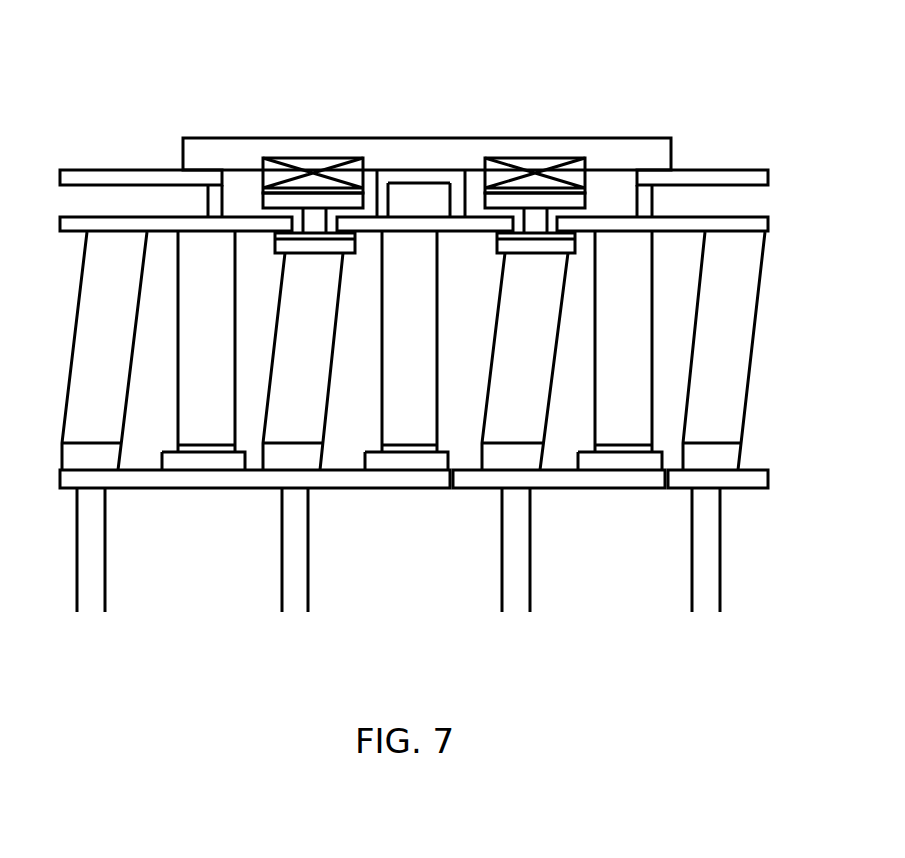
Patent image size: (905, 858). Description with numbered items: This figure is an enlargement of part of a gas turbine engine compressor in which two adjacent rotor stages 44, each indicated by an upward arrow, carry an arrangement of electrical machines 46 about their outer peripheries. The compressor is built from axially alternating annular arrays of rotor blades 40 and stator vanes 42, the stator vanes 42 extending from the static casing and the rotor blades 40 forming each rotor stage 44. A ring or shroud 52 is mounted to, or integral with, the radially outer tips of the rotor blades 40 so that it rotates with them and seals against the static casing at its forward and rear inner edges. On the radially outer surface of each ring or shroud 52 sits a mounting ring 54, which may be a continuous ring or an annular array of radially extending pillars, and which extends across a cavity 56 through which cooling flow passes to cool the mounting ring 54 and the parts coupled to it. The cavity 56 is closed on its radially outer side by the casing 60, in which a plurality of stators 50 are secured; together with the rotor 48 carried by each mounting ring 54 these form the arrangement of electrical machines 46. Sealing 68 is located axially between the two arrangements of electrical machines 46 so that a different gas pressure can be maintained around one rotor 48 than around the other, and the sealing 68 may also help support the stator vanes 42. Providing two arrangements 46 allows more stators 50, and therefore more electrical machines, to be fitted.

The rotor blades 40 is at (325, 330).
The stator vanes 42 is at (425, 362).
The rotor stage 44 is at (296, 590).
The arrangement of electrical machines 46 is at (278, 91).
The rotor 48 is at (290, 202).
The stators 50 is at (275, 166).
The ring or shroud 52 is at (298, 247).
The mounting ring 54 is at (317, 229).
The cavity 56 is at (414, 208).
The casing 60 is at (745, 177).
The sealing 68 is at (455, 192).